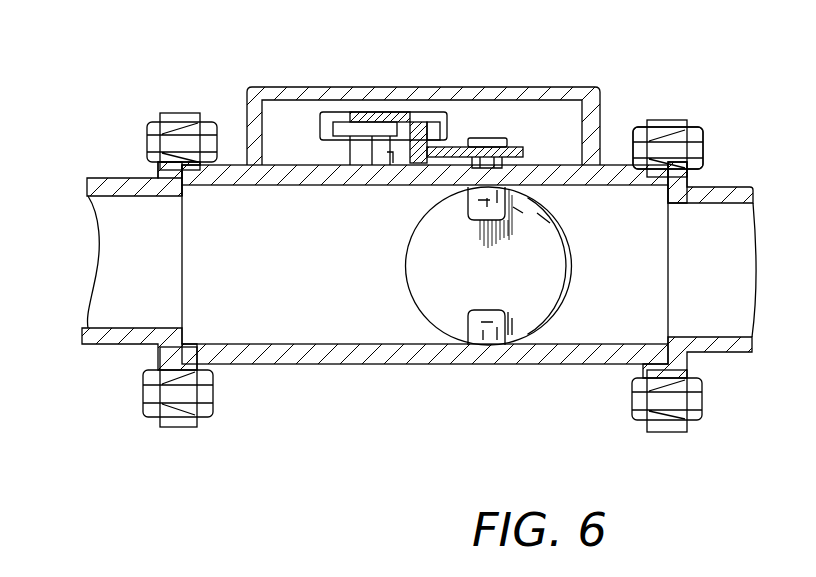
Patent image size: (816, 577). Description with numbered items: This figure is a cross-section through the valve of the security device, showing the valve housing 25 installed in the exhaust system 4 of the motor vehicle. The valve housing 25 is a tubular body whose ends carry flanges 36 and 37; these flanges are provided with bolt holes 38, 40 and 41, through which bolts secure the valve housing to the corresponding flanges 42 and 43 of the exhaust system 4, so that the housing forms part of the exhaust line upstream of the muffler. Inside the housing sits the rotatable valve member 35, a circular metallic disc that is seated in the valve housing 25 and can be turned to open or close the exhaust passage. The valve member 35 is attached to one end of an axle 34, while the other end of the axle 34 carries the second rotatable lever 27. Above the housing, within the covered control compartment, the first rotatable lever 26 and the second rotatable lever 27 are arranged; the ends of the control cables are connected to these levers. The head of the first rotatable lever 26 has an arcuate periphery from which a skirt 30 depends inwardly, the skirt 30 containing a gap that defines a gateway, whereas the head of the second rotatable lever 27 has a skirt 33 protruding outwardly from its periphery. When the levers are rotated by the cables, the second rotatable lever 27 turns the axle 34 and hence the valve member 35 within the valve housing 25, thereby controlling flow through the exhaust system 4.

The exhaust system 4 is at (115, 343).
The valve housing 25 is at (603, 122).
The first rotatable lever 26 is at (347, 103).
The second rotatable lever 27 is at (518, 143).
The skirt 30 is at (347, 187).
The skirt 33 is at (406, 150).
The axle 34 is at (548, 212).
The rotatable valve member 35 is at (418, 276).
The flange 36 is at (193, 113).
The flange 37 is at (677, 120).
The bolt hole 38 is at (188, 165).
The bolt hole 40 is at (633, 423).
The bolt hole 41 is at (665, 152).
The flange 42 is at (160, 180).
The flange 43 is at (675, 185).